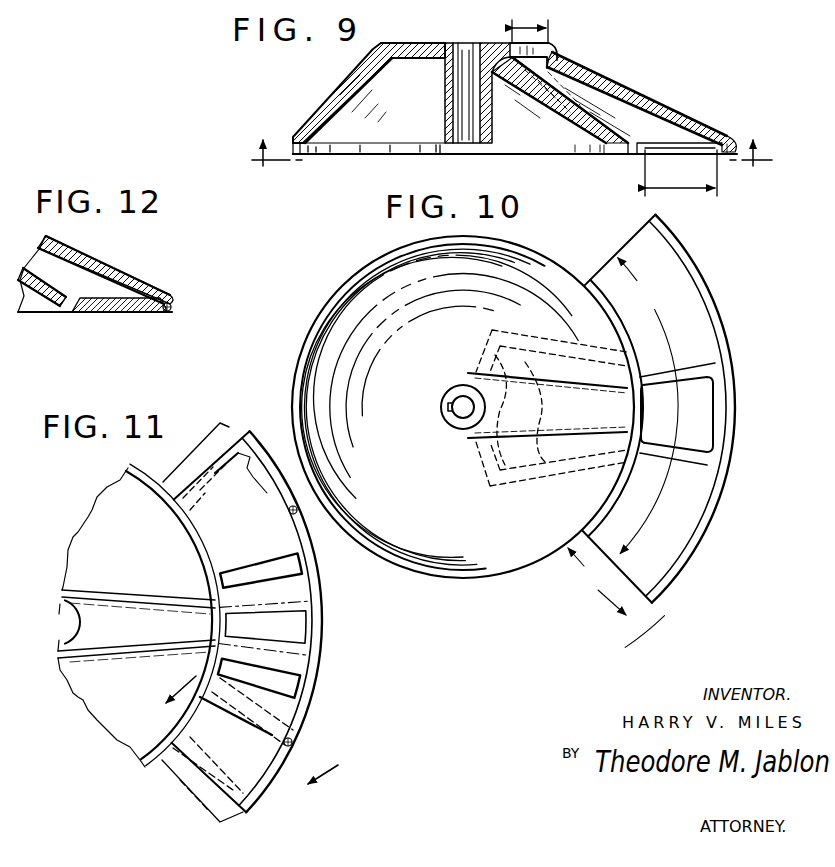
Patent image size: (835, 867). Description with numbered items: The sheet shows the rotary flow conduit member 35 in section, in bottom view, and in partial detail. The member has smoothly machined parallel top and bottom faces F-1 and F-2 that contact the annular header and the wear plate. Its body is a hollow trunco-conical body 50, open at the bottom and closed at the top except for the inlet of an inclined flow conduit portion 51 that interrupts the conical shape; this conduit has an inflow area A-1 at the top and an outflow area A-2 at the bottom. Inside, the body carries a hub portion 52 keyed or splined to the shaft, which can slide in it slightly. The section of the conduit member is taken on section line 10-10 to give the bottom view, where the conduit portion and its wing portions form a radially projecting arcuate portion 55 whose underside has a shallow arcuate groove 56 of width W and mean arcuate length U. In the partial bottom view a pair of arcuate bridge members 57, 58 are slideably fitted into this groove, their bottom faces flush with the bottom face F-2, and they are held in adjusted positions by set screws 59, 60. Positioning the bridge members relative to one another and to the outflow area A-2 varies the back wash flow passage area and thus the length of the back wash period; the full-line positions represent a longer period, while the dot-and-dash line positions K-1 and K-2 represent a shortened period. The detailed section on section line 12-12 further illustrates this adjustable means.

In FIG. 10, the disk 35 is at (334, 276).
In FIG. 9, the hollow trunco-conical body 50 is at (373, 72).
In FIG. 10, the hollow trunco-conical body 50 is at (553, 287).
In FIG. 9, the inclined flow conduit portion 51 is at (622, 93).
In FIG. 11, the inclined flow conduit portion 51 is at (153, 596).
In FIG. 12, the inclined flow conduit portion 51 is at (116, 278).
In FIG. 9, the hub portion 52 is at (486, 106).
In FIG. 10, the hub portion 52 is at (452, 416).
In FIG. 10, the radially projecting arcuate portion 55 is at (728, 333).
In FIG. 9, the shallow arcuate groove 56 is at (672, 151).
In FIG. 11, the arcuate bridge member 57 is at (178, 474).
In FIG. 11, the arcuate bridge member 58 is at (190, 786).
In FIG. 12, the arcuate bridge member 58 is at (122, 310).
In FIG. 11, the set screw 59 is at (297, 512).
In FIG. 11, the set screw 60 is at (293, 740).
In FIG. 12, the set screw 60 is at (172, 306).
In FIG. 9, the top face F-1 is at (412, 43).
In FIG. 9, the bottom face F-2 is at (402, 155).
In FIG. 9, the inflow area A-1 is at (540, 26).
In FIG. 9, the outflow area A-2 is at (682, 190).
In FIG. 10, the outflow area A-2 is at (705, 410).
In FIG. 11, the outflow area A-2 is at (300, 634).
In FIG. 11, the dot-and-dash line position K-1 is at (297, 607).
In FIG. 11, the dot-and-dash line position K-2 is at (297, 651).
In FIG. 10, the mean arcuate length U is at (648, 406).
In FIG. 10, the width W is at (616, 597).
In FIG. 9, the section line 10- 10 is at (511, 133).
In FIG. 11, the section line 12- 12 is at (260, 716).